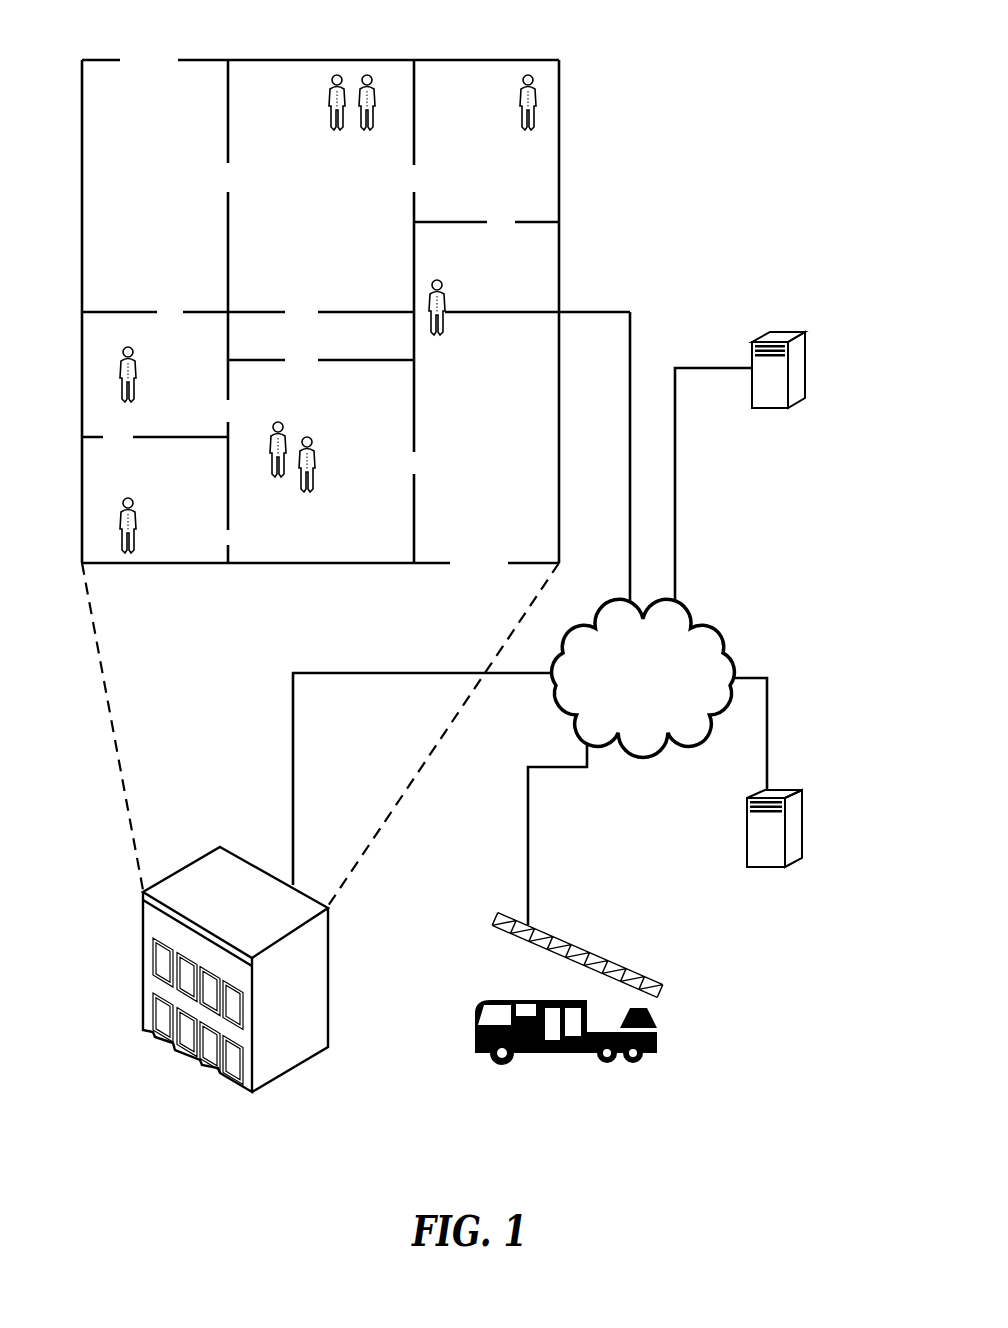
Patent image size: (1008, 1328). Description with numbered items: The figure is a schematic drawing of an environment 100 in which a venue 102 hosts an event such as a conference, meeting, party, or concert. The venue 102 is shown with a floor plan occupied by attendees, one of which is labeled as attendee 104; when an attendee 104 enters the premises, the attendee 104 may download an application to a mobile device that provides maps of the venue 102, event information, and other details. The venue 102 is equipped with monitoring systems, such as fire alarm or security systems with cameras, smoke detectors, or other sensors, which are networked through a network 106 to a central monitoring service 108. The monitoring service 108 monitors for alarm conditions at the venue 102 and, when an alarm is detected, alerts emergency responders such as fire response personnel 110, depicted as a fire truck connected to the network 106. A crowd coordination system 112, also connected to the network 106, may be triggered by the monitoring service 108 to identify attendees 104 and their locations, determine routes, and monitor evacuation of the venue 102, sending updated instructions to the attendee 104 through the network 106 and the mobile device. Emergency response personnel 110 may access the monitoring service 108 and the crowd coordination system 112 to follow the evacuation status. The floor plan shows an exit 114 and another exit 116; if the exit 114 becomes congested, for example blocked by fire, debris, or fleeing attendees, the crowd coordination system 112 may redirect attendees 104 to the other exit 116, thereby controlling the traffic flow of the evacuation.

The environment 100 is at (641, 118).
The venue 102 is at (328, 1005).
The attendee 104 is at (445, 300).
The network 106 is at (705, 630).
The monitoring service 108 is at (783, 332).
The fire response personnel 110 is at (608, 963).
The crowd coordination system 112 is at (780, 788).
The exit 114 is at (148, 52).
The exit 116 is at (478, 572).